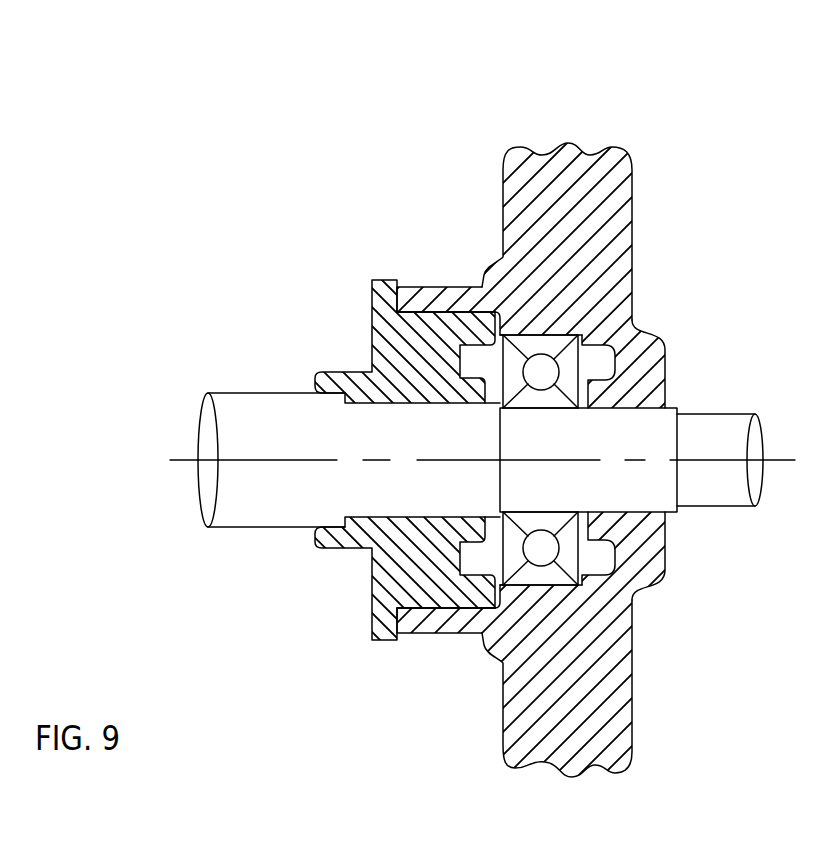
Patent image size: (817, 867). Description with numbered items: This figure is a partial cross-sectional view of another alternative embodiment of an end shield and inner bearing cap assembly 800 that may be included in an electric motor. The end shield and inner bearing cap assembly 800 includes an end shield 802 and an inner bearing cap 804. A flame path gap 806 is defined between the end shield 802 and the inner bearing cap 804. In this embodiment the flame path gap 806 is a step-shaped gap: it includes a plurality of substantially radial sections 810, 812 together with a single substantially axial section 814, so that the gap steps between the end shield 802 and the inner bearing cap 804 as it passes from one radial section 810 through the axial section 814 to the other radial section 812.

The end shield and inner bearing cap assembly 800 is at (522, 86).
The end shield 802 is at (667, 363).
The inner bearing cap 804 is at (372, 352).
The flame path gap 806 is at (508, 299).
The substantially radial section 810 is at (510, 318).
The substantially radial section 812 is at (400, 292).
The substantially axial section 814 is at (446, 314).